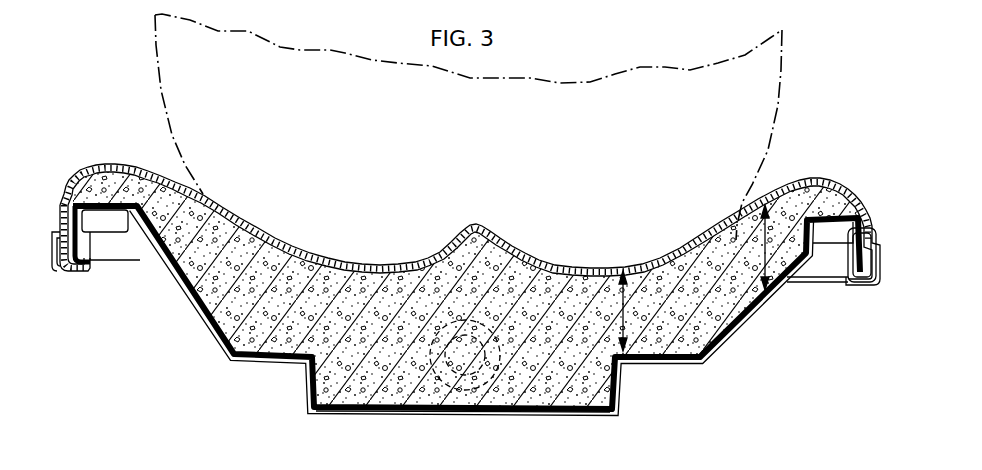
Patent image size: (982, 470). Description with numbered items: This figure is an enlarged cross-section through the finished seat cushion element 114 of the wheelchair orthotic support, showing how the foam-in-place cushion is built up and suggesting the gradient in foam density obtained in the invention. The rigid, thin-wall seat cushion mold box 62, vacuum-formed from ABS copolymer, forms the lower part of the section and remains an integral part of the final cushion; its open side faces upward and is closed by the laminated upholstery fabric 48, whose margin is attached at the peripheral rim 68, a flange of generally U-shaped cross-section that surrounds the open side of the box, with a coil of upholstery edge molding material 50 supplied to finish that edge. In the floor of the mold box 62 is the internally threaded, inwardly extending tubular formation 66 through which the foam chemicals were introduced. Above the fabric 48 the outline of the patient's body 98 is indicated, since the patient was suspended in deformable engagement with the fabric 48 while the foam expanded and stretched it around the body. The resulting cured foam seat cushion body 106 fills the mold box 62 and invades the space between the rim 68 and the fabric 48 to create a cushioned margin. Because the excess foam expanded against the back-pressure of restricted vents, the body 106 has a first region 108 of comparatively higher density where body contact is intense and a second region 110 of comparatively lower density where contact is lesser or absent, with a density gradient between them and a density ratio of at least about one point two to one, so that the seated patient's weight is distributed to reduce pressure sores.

The laminated upholstery fabric 48 is at (843, 189).
The upholstery edge molding material 50 is at (827, 265).
The seat cushion mold box 62 is at (290, 366).
The tubular formation 66 is at (504, 420).
The peripheral rim 68 is at (99, 212).
The patient's body 98 is at (444, 122).
The cured foam seat cushion body 106 is at (323, 316).
The first region 108 is at (592, 292).
The second region 110 is at (758, 215).
The finished seat cushion element 114 is at (735, 337).